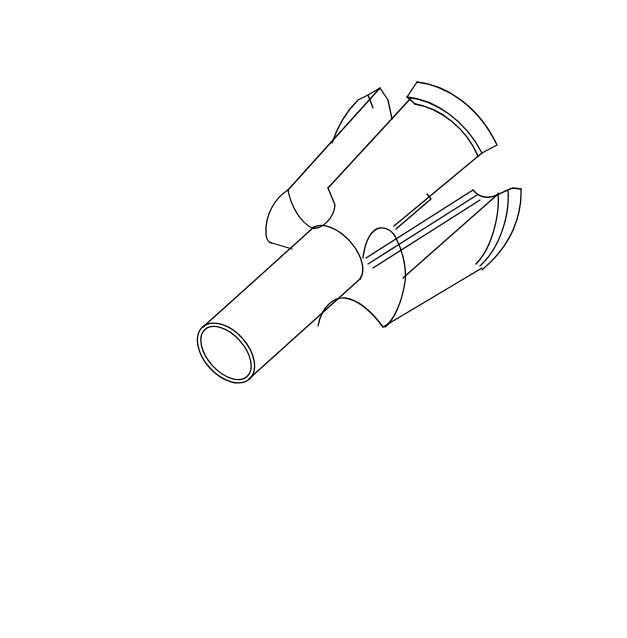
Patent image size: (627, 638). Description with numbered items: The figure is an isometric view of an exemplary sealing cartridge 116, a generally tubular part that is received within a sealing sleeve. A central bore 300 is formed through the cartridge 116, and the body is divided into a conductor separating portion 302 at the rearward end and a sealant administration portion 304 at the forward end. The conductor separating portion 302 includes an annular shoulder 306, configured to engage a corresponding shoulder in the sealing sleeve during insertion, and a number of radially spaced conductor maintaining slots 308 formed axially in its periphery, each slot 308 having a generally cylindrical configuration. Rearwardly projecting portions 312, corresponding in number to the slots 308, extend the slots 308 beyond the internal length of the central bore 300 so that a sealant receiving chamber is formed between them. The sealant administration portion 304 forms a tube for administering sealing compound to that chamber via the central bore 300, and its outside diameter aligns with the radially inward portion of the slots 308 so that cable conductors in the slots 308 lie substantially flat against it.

The sealing cartridge 116 is at (210, 164).
The central bore 300 is at (230, 360).
The conductor separating portion 302 is at (522, 301).
The sealant administration portion 304 is at (311, 354).
The annular shoulder 306 is at (522, 236).
The conductor maintaining slots 308 is at (319, 207).
The rearwardly projecting portions 312 is at (443, 146).